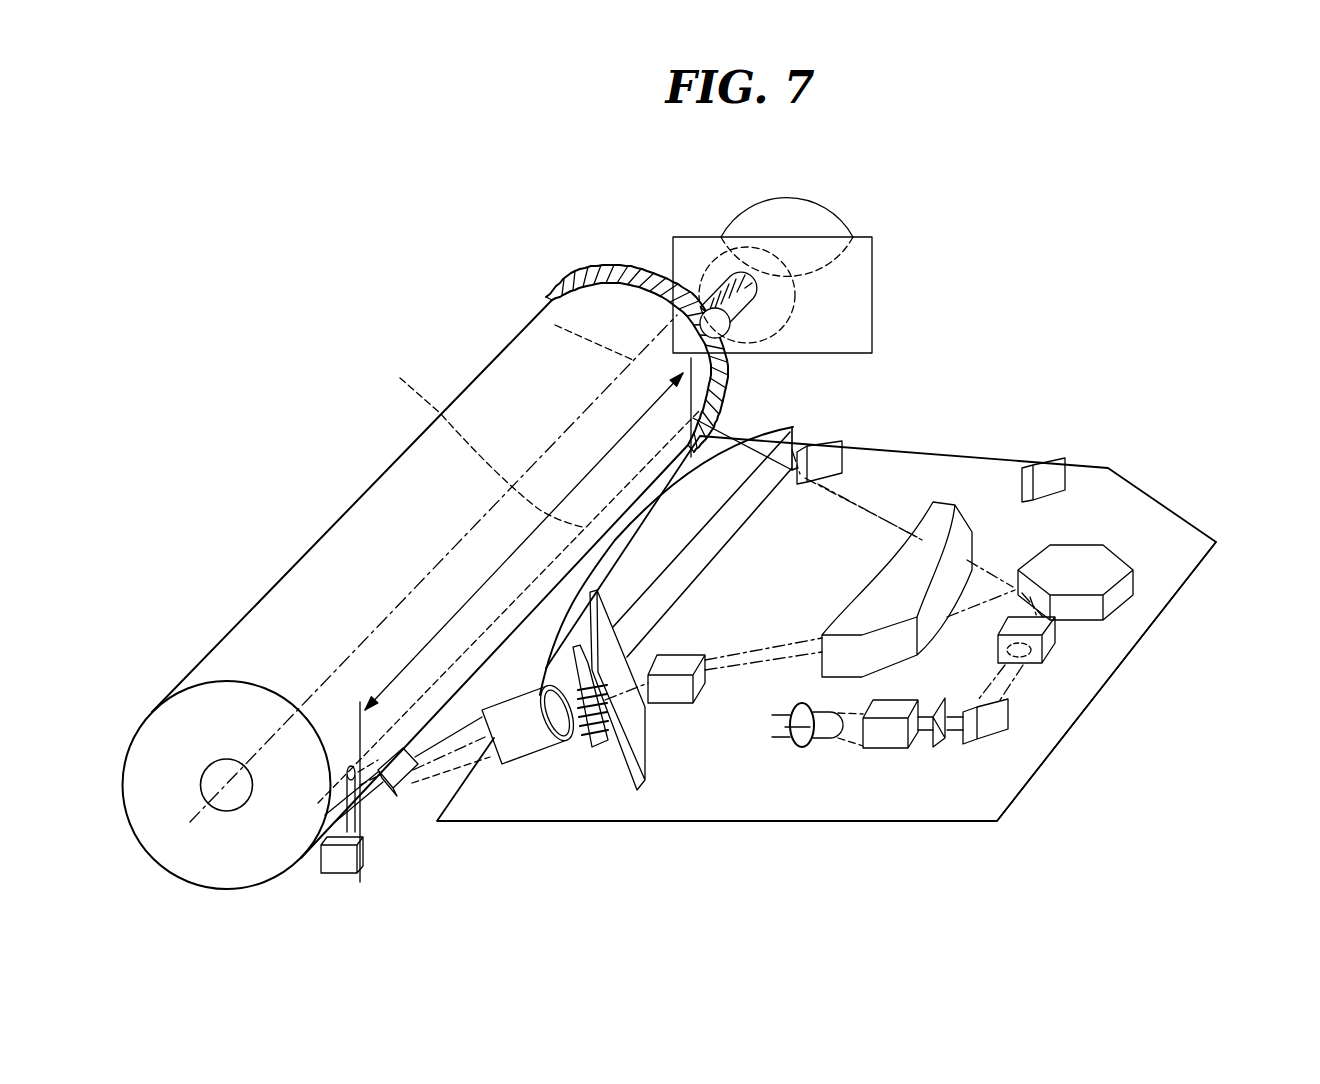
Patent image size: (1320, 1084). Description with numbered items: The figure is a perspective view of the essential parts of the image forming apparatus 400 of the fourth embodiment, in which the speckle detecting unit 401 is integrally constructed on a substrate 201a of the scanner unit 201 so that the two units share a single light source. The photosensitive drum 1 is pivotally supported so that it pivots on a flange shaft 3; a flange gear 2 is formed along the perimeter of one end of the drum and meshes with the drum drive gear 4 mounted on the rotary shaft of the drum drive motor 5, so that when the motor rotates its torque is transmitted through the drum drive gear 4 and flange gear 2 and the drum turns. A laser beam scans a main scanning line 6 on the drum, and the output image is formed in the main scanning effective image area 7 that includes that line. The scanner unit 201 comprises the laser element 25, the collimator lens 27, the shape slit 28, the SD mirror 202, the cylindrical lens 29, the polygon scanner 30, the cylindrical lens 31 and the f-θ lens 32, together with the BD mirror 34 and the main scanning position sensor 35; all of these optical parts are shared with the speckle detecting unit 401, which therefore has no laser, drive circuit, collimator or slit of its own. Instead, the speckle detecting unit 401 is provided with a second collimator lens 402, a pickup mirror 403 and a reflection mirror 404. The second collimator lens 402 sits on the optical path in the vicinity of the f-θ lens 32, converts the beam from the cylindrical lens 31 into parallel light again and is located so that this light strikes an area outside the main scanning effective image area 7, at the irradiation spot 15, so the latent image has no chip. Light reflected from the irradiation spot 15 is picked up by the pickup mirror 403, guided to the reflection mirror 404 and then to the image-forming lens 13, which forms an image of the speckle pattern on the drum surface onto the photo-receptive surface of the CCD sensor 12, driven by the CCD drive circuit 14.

The photosensitive drum 1 is at (525, 357).
The flange gear 2 is at (600, 268).
The flange shaft 3 is at (545, 316).
The drum drive gear 4 is at (740, 283).
The drum drive motor 5 is at (858, 262).
The main scanning line 6 is at (477, 442).
The main scanning effective image area 7 is at (597, 460).
The CCD sensor 12 is at (575, 647).
The image-forming lens 13 is at (513, 705).
The CCD drive circuit 14 is at (590, 592).
The irradiation spot 15 is at (350, 768).
The laser element 25 is at (825, 737).
The collimator lens 27 is at (887, 748).
The shape slit 28 is at (943, 722).
The cylindrical lens 29 is at (1057, 633).
The polygon scanner 30 is at (1135, 580).
The cylindrical lens 31 is at (952, 520).
The f-θ lens 32 is at (777, 433).
The BD mirror 34 is at (850, 447).
The main scanning position sensor 35 is at (1072, 468).
The scanner unit 201 is at (1160, 487).
The substrate 201a is at (983, 787).
The SD mirror 202 is at (1010, 722).
The image forming apparatus 400 is at (1040, 280).
The speckle detecting unit 401 is at (545, 762).
The second collimator lens 402 is at (677, 703).
The pickup mirror 403 is at (330, 862).
The reflection mirror 404 is at (408, 762).